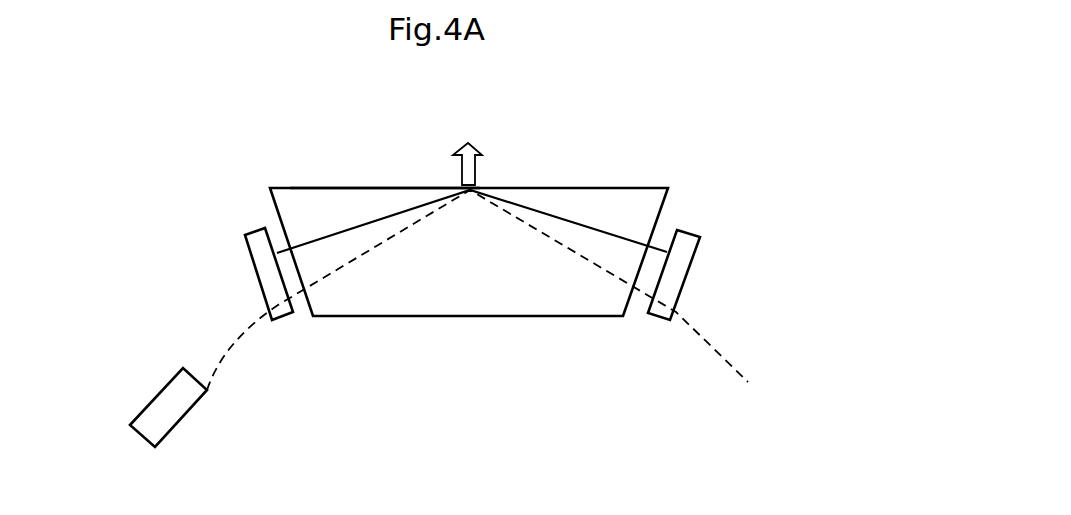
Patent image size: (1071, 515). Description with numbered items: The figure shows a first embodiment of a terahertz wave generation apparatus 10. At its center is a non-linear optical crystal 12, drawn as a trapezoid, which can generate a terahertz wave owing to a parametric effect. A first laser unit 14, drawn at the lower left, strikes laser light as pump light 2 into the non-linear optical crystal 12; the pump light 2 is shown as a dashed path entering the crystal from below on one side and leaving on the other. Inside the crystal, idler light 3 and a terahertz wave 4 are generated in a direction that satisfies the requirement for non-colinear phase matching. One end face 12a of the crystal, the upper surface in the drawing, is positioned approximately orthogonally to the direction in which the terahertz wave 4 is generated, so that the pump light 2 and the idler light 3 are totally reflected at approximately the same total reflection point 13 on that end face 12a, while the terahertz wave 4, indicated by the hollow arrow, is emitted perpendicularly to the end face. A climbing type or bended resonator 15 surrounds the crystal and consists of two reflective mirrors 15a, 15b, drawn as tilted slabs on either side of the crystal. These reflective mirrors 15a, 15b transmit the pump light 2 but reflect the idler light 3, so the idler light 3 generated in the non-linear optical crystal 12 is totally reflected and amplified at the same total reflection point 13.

The pump light 2 is at (232, 343).
The idler light 3 is at (375, 220).
The terahertz wave 4 is at (471, 131).
The terahertz wave generation apparatus 10 is at (668, 168).
The non-linear optical crystal 12 is at (430, 297).
The end face 12a is at (383, 187).
The total reflection point 13 is at (478, 183).
The first laser unit 14 is at (183, 402).
The resonator 15 is at (117, 230).
The reflective mirror 15a is at (258, 267).
The reflective mirror 15b is at (677, 275).